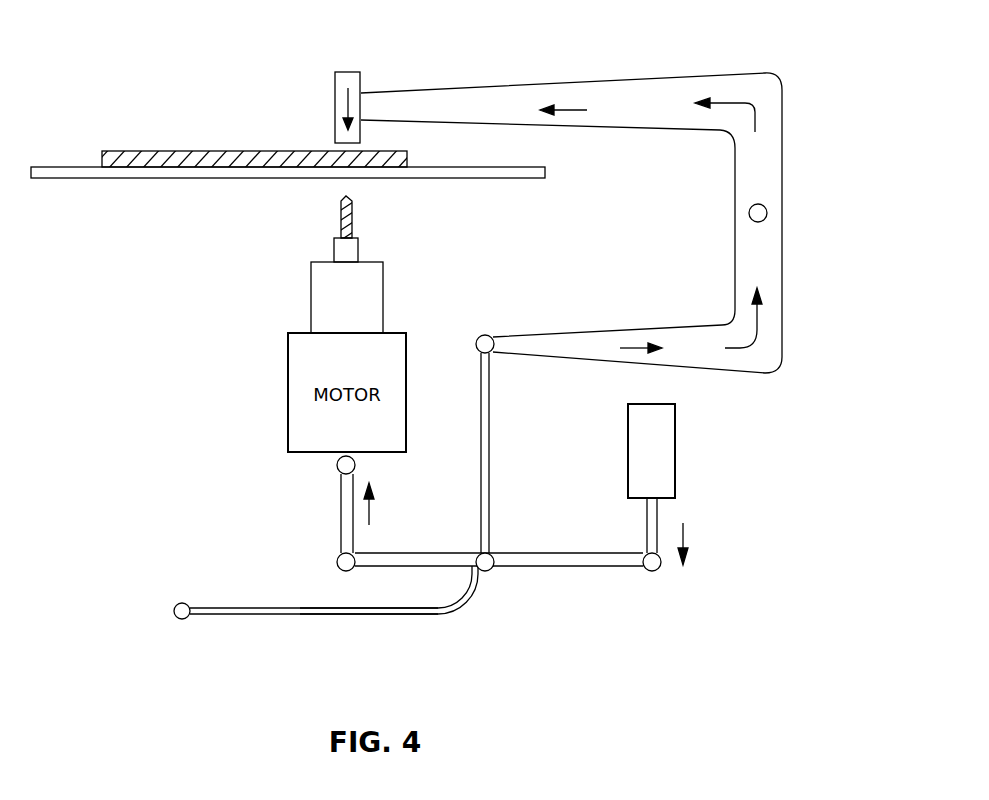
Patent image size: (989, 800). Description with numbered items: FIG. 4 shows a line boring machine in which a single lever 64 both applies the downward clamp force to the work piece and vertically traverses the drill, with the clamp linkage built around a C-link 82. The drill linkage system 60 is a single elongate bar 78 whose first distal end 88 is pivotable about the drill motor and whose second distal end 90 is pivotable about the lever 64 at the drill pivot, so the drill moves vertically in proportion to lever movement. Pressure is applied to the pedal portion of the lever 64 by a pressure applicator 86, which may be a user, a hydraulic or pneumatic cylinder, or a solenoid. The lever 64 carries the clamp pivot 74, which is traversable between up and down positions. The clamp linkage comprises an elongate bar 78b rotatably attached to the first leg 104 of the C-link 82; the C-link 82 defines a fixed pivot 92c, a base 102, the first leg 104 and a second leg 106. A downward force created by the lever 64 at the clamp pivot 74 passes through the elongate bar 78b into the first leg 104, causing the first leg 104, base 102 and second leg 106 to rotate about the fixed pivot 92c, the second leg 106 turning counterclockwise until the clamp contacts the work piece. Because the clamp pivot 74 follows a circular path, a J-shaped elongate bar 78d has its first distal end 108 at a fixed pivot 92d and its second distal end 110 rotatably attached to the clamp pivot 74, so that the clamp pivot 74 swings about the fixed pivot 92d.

The drill linkage system 60 is at (308, 503).
The lever 64 is at (575, 560).
The clamp pivot 74 is at (487, 564).
The elongate bar 78 is at (340, 527).
The elongate bar 78b is at (491, 432).
The elongate bar 78d is at (302, 614).
The C-link 82 is at (770, 177).
The pressure applicator 86 is at (668, 433).
The first distal end 88 is at (337, 463).
The second distal end 90 is at (337, 556).
The fixed pivot 92c is at (758, 213).
The fixed pivot 92d is at (176, 617).
The base 102 is at (768, 253).
The first leg 104 is at (547, 345).
The second leg 106 is at (590, 92).
The first distal end 108 is at (230, 614).
The second distal end 110 is at (450, 612).